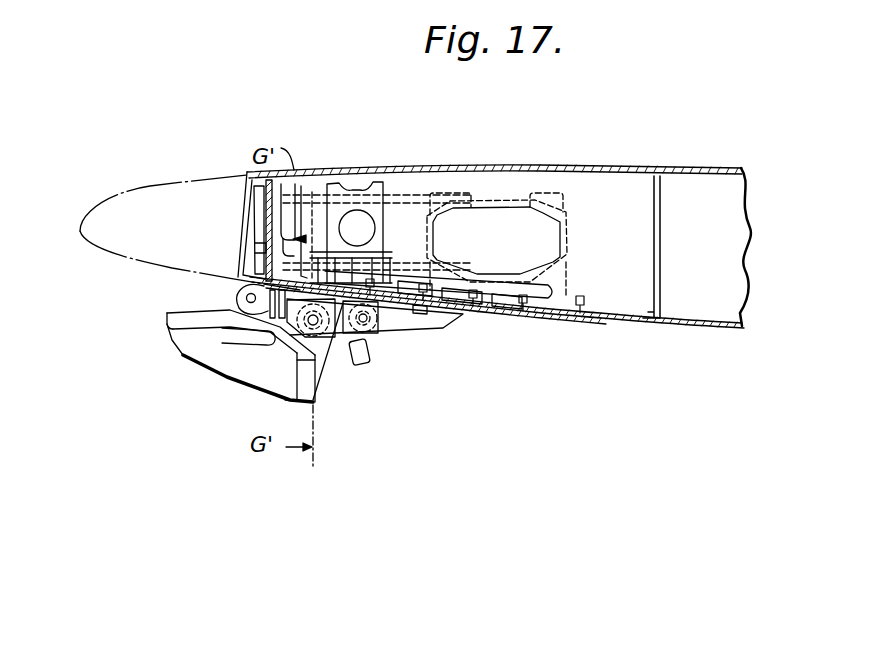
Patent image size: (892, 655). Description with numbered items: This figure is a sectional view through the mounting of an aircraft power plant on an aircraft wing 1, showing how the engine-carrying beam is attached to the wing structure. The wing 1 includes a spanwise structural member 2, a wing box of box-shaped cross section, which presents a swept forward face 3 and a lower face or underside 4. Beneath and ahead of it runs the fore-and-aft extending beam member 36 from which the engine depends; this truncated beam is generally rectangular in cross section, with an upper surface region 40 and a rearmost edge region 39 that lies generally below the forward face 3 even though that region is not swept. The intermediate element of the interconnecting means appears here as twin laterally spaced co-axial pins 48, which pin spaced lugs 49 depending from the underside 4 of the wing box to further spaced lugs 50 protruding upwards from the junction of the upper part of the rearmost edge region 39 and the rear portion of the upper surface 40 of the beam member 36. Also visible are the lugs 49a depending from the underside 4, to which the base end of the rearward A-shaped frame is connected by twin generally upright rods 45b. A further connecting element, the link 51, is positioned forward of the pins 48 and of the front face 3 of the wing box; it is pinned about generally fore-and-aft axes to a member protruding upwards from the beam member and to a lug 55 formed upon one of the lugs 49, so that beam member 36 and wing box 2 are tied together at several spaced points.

The aircraft wing 1 is at (142, 187).
The spanwise structural member 2 is at (550, 166).
The forward face 3 is at (262, 250).
The lower face or underside 4 is at (610, 324).
The beam member 36 is at (182, 358).
The rearmost edge region 39 is at (322, 358).
The upper surface region 40 is at (167, 315).
The upright rods 45b is at (372, 360).
The co-axial pins 48 is at (313, 320).
The spaced lugs 49 is at (313, 320).
The lugs 49a is at (388, 322).
The spaced lugs 50 is at (328, 355).
The link 51 is at (248, 297).
The lug 55 is at (319, 188).